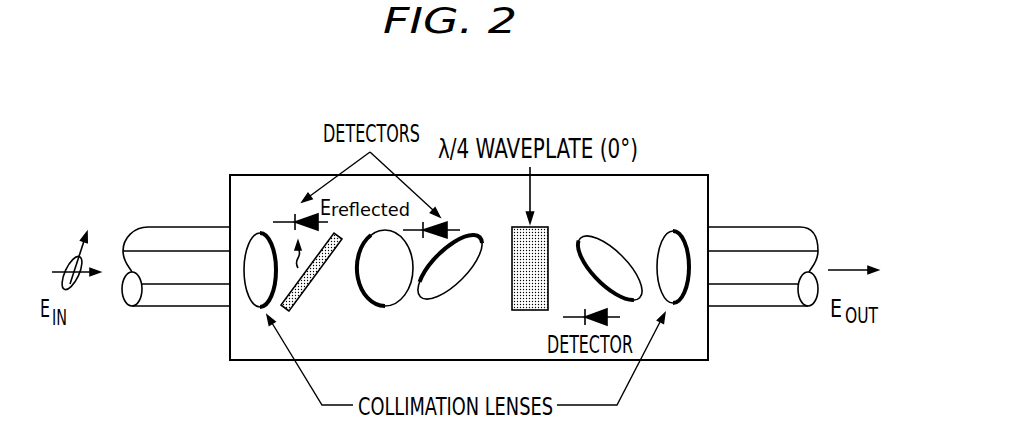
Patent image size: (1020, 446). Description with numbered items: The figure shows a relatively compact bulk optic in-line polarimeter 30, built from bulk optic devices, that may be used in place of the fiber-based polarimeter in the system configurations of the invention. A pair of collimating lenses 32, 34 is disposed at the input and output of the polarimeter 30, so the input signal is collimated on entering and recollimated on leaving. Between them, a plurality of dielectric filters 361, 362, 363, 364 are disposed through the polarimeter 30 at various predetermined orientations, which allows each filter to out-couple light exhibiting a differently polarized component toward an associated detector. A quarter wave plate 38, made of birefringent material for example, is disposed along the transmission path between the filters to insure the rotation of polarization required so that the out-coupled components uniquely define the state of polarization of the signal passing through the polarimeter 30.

The bulk optic in-line polarimeter 30 is at (457, 75).
The collimating lens 32 is at (255, 238).
The collimating lens 34 is at (675, 235).
The dielectric filter 361 is at (304, 290).
The dielectric filter 362 is at (385, 298).
The dielectric filter 363 is at (445, 280).
The dielectric filter 364 is at (602, 242).
The quarter wave plate 38 is at (549, 231).